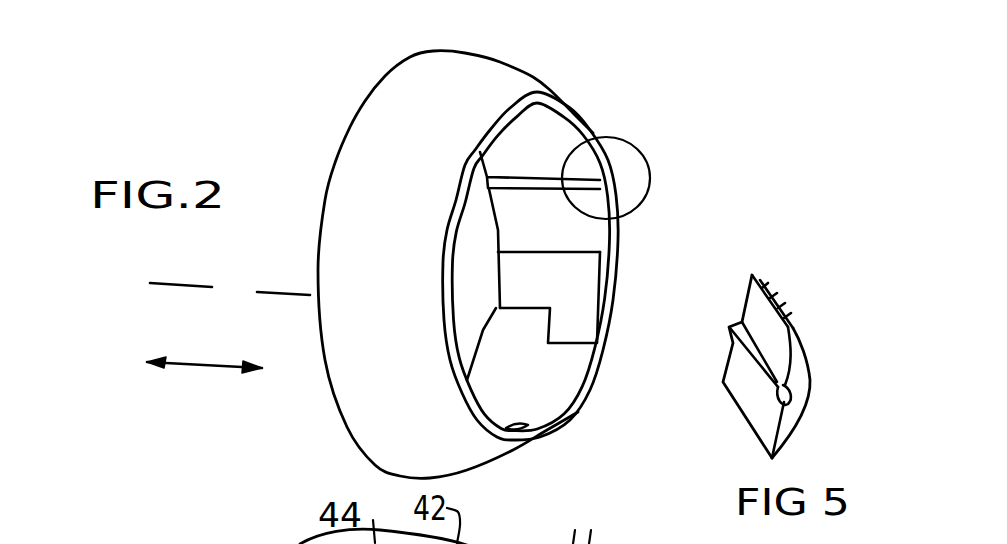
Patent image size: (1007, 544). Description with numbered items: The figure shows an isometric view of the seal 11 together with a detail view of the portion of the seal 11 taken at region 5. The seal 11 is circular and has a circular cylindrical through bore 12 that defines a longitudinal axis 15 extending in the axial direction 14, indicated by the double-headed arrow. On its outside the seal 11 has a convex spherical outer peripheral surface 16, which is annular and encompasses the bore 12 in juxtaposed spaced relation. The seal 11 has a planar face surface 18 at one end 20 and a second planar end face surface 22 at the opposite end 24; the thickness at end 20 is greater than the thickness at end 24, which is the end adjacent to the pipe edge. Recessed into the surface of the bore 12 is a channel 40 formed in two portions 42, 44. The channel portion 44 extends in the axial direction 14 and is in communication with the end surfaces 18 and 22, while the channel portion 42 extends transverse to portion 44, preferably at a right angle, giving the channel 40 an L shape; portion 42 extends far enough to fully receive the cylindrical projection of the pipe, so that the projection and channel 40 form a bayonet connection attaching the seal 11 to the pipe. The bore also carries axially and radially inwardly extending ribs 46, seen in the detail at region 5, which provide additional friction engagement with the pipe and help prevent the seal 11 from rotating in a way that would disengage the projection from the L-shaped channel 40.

In FIG. 2, the region 5 is at (627, 140).
In FIG. 2, the seal 11 is at (621, 43).
In FIG. 5, the seal 11 is at (777, 300).
In FIG. 2, the through bore 12 is at (568, 147).
In FIG. 2, the axial direction 14 is at (203, 372).
In FIG. 2, the longitudinal axis 15 is at (237, 289).
In FIG. 2, the convex spherical outer peripheral surface 16 is at (472, 85).
In FIG. 2, the planar face surface 18 is at (348, 128).
In FIG. 2, the end 20 is at (357, 422).
In FIG. 2, the second planar end face surface 22 is at (565, 417).
In FIG. 5, the second planar end face surface 22 is at (793, 395).
In FIG. 2, the end 24 is at (497, 445).
In FIG. 2, the channel 40 is at (572, 255).
In FIG. 2, the channel portion 42 is at (562, 338).
In FIG. 2, the channel portion 44 is at (613, 302).
In FIG. 2, the ribs 46 is at (540, 190).
In FIG. 5, the ribs 46 is at (765, 375).